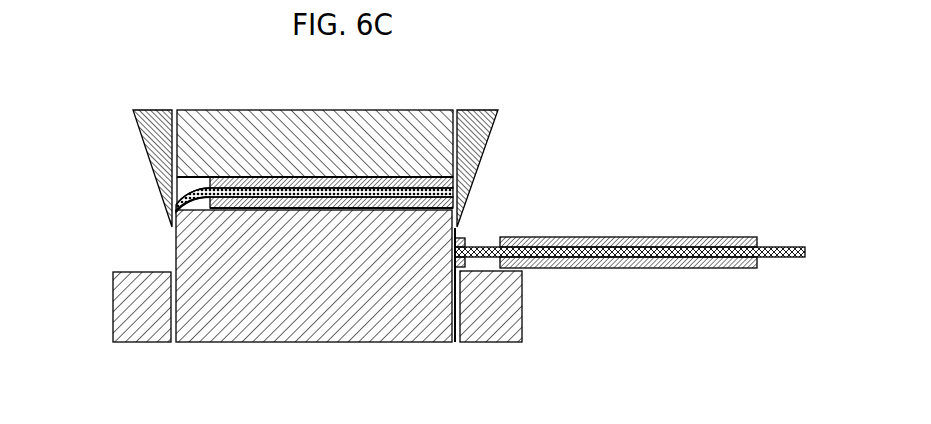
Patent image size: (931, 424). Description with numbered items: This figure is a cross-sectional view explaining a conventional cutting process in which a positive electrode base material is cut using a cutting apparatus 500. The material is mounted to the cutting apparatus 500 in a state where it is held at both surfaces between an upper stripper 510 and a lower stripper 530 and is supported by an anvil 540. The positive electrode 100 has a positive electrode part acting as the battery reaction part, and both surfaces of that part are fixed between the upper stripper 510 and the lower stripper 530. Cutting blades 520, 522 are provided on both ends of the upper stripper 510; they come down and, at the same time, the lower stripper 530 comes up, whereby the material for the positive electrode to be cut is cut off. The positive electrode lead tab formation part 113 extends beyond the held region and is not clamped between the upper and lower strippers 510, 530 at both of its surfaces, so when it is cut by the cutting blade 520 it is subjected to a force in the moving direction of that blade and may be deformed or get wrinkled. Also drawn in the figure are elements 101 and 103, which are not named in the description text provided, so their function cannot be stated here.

The positive electrode 100 is at (289, 214).
The flexible substrate 101 is at (582, 238).
The reinforcing plate 103 is at (650, 240).
The positive electrode lead tab formation part 113 is at (162, 200).
The cutting apparatus 500 is at (99, 127).
The upper stripper 510 is at (337, 135).
The cutting blade 520 is at (166, 110).
The cutting blade 522 is at (474, 113).
The lower stripper 530 is at (322, 318).
The anvil 540 is at (155, 320).